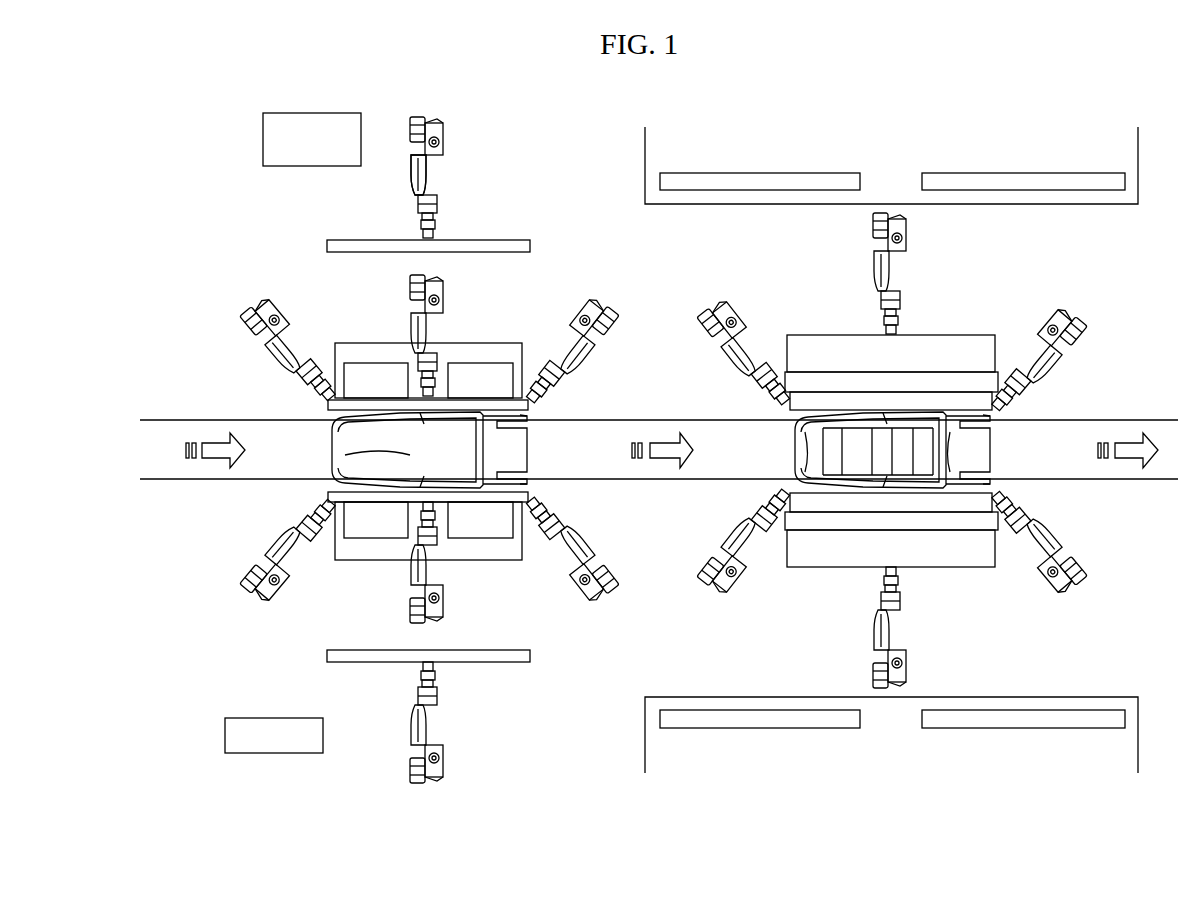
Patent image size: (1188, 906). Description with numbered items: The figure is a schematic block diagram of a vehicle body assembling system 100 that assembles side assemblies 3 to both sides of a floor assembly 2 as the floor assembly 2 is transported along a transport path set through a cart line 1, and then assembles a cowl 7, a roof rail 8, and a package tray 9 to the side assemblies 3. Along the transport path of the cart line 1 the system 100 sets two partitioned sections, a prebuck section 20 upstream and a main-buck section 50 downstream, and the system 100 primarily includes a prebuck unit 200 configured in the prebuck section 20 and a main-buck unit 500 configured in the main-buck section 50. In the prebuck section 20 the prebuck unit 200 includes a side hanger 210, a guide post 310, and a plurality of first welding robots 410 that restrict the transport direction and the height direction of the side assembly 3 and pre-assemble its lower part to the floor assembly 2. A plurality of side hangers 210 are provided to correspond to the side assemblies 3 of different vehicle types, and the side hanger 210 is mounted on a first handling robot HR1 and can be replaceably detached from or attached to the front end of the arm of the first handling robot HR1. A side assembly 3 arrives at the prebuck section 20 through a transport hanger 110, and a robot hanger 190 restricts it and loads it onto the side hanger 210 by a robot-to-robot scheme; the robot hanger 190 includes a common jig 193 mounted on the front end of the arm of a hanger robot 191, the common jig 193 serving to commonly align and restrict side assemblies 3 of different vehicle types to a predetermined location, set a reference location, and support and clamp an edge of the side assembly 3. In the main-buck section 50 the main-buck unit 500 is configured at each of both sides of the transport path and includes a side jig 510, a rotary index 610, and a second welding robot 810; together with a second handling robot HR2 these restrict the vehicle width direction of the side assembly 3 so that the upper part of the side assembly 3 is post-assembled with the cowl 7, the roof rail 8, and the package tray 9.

The cart line 1 is at (656, 418).
The floor assembly 2 is at (392, 455).
The side assembly 3 is at (528, 408).
The cowl 7 is at (930, 440).
The roof rail 8 is at (890, 455).
The package tray 9 is at (793, 463).
The prebuck section 20 is at (486, 767).
The main-buck section 50 is at (981, 643).
The vehicle body assembling system 100 is at (673, 105).
The transport hanger 110 is at (263, 143).
The robot hanger 190 is at (450, 165).
The hanger robot 191 is at (410, 137).
The common jig 193 is at (494, 240).
The prebuck unit 200 is at (514, 330).
The side hanger 210 is at (328, 408).
The guide post 310 is at (372, 362).
The first welding robot 410 is at (262, 302).
The main-buck unit 500 is at (980, 320).
The side jig 510 is at (758, 173).
The rotary index 610 is at (935, 340).
The second welding robot 810 is at (730, 310).
The first handling robot HR1 is at (410, 276).
The second handling robot HR2 is at (873, 232).